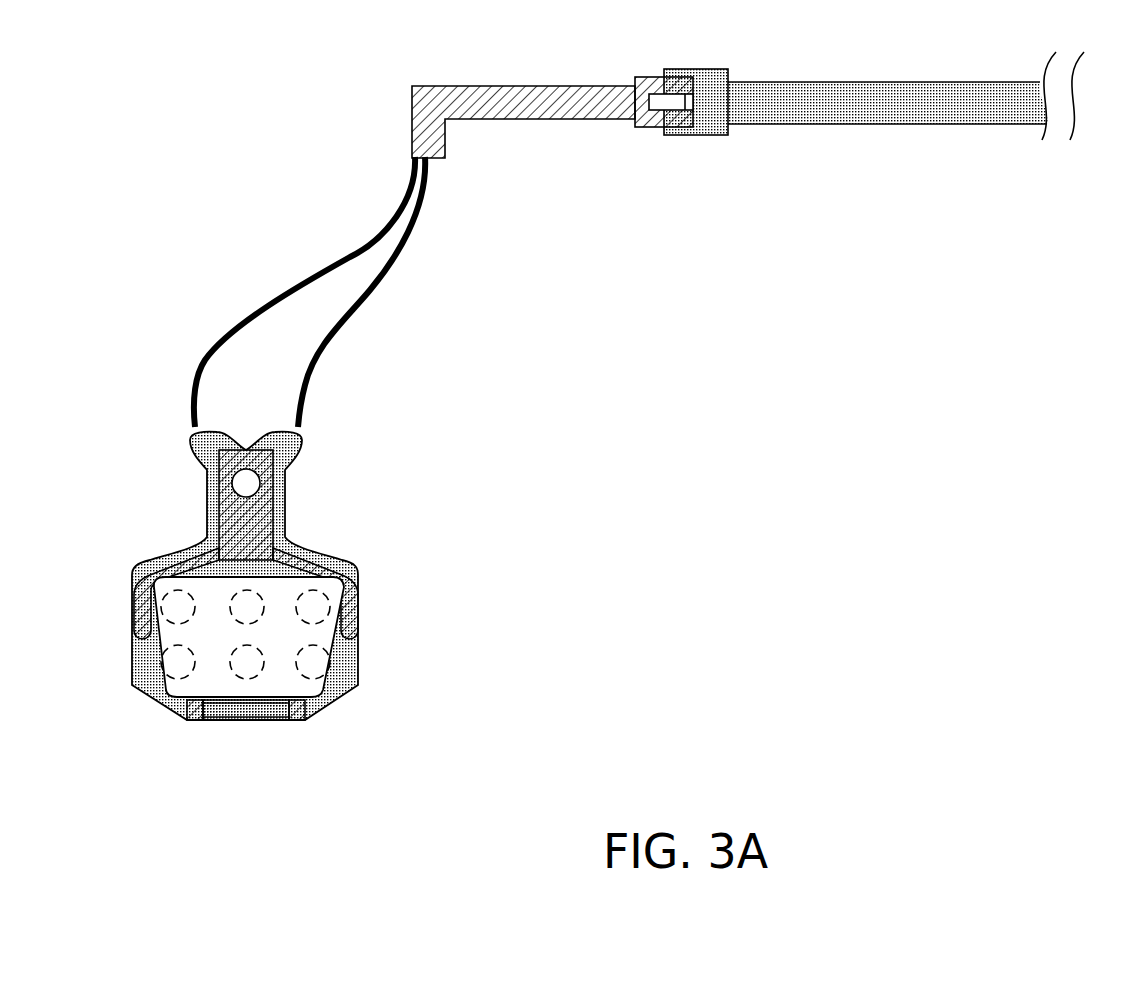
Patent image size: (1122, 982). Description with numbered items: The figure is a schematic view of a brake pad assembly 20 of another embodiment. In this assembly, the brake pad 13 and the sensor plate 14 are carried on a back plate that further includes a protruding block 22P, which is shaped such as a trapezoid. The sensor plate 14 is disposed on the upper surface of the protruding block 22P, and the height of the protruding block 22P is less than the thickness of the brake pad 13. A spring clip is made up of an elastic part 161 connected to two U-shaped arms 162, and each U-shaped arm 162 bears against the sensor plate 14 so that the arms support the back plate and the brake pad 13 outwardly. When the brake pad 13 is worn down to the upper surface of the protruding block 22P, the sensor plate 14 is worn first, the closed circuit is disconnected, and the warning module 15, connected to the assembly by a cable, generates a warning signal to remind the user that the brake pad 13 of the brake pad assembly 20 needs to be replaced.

The brake pad assembly 20 is at (1080, 730).
The warning module 15 is at (768, 82).
The sensor plate 14 is at (352, 672).
The brake pad 13 is at (181, 688).
The elastic part 161 is at (272, 458).
The U-shaped arm 162 is at (358, 617).
The protruding block 22P is at (284, 718).